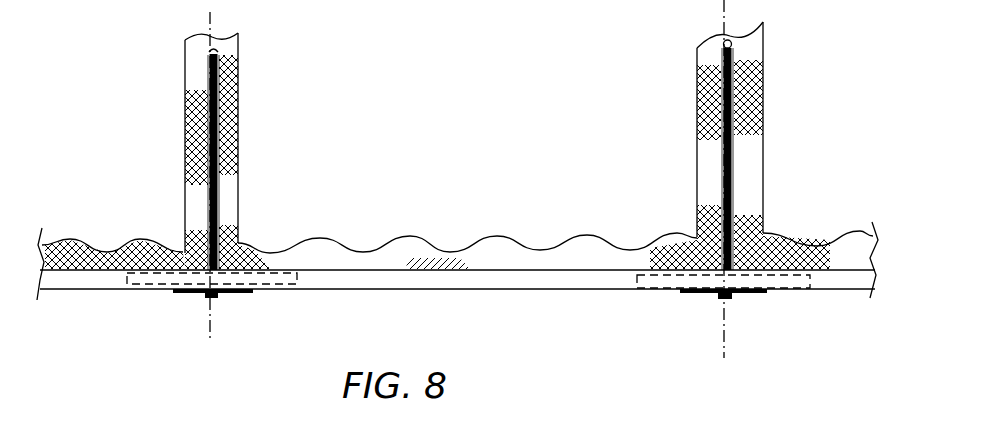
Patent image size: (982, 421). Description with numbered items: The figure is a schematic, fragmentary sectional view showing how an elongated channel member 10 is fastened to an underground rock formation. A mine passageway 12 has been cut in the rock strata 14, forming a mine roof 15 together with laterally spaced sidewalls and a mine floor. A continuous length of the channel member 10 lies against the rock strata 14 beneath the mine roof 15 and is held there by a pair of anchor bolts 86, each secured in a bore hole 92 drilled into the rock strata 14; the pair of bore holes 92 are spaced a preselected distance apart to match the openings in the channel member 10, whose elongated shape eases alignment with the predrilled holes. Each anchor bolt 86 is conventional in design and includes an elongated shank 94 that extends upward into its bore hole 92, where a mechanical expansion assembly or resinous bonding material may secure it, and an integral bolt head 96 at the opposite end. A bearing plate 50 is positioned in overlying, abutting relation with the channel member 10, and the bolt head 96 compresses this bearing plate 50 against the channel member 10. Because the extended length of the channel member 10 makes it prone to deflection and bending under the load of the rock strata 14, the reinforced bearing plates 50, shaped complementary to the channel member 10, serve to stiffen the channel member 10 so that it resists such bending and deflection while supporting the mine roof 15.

The channel member 10 is at (530, 290).
The mine passageway 12 is at (375, 327).
The rock strata 14 is at (226, 117).
The mine roof 15 is at (470, 270).
The bearing plate 50 is at (235, 295).
The anchor bolt 86 is at (217, 215).
The bore hole 92 is at (207, 203).
The shank 94 is at (208, 72).
The bolt head 96 is at (203, 298).